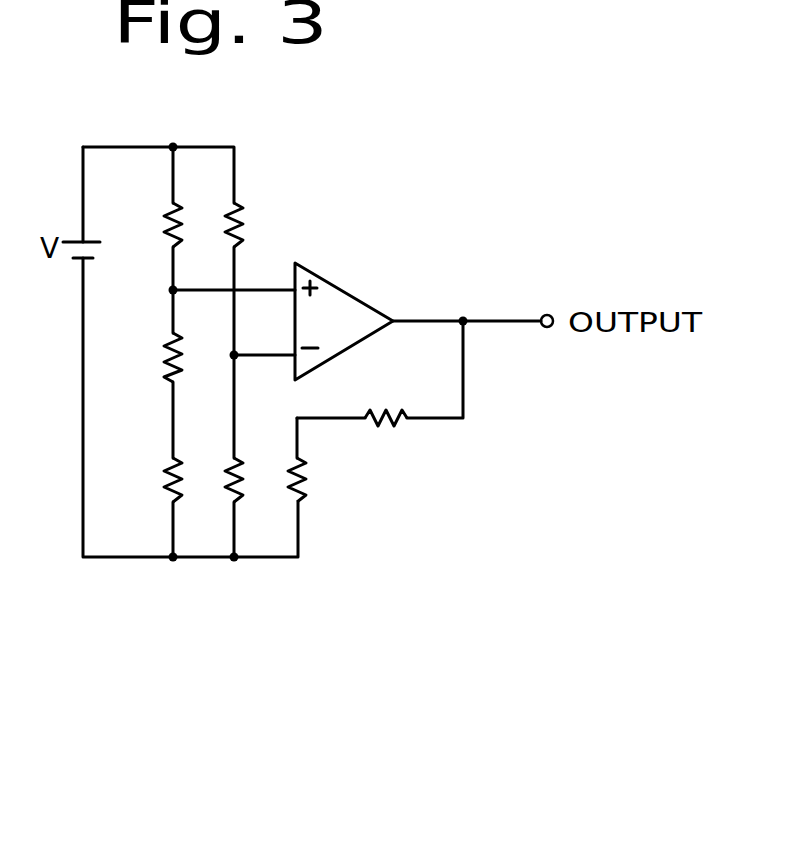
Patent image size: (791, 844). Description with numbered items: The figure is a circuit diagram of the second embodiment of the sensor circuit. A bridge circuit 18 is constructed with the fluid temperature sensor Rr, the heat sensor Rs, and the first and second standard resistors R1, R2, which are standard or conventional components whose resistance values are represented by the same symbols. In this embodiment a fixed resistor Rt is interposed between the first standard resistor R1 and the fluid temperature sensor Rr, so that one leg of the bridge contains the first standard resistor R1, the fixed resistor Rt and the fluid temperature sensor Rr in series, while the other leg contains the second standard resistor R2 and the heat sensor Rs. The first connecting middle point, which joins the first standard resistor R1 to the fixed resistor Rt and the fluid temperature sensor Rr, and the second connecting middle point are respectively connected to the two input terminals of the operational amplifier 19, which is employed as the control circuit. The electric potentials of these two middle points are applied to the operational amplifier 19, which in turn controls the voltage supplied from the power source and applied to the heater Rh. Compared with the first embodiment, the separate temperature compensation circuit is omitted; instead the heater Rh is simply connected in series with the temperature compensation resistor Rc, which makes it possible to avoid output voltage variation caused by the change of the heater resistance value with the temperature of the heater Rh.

The bridge circuit 18 is at (192, 365).
The operational amplifier 19 is at (358, 297).
The first standard resistor R1 is at (155, 225).
The second standard resistor R2 is at (257, 225).
The fixed resistor Rt is at (152, 357).
The fluid temperature sensor Rr is at (152, 480).
The heat sensor Rs is at (254, 480).
The heater Rh is at (320, 480).
The temperature compensation resistor Rc is at (386, 396).